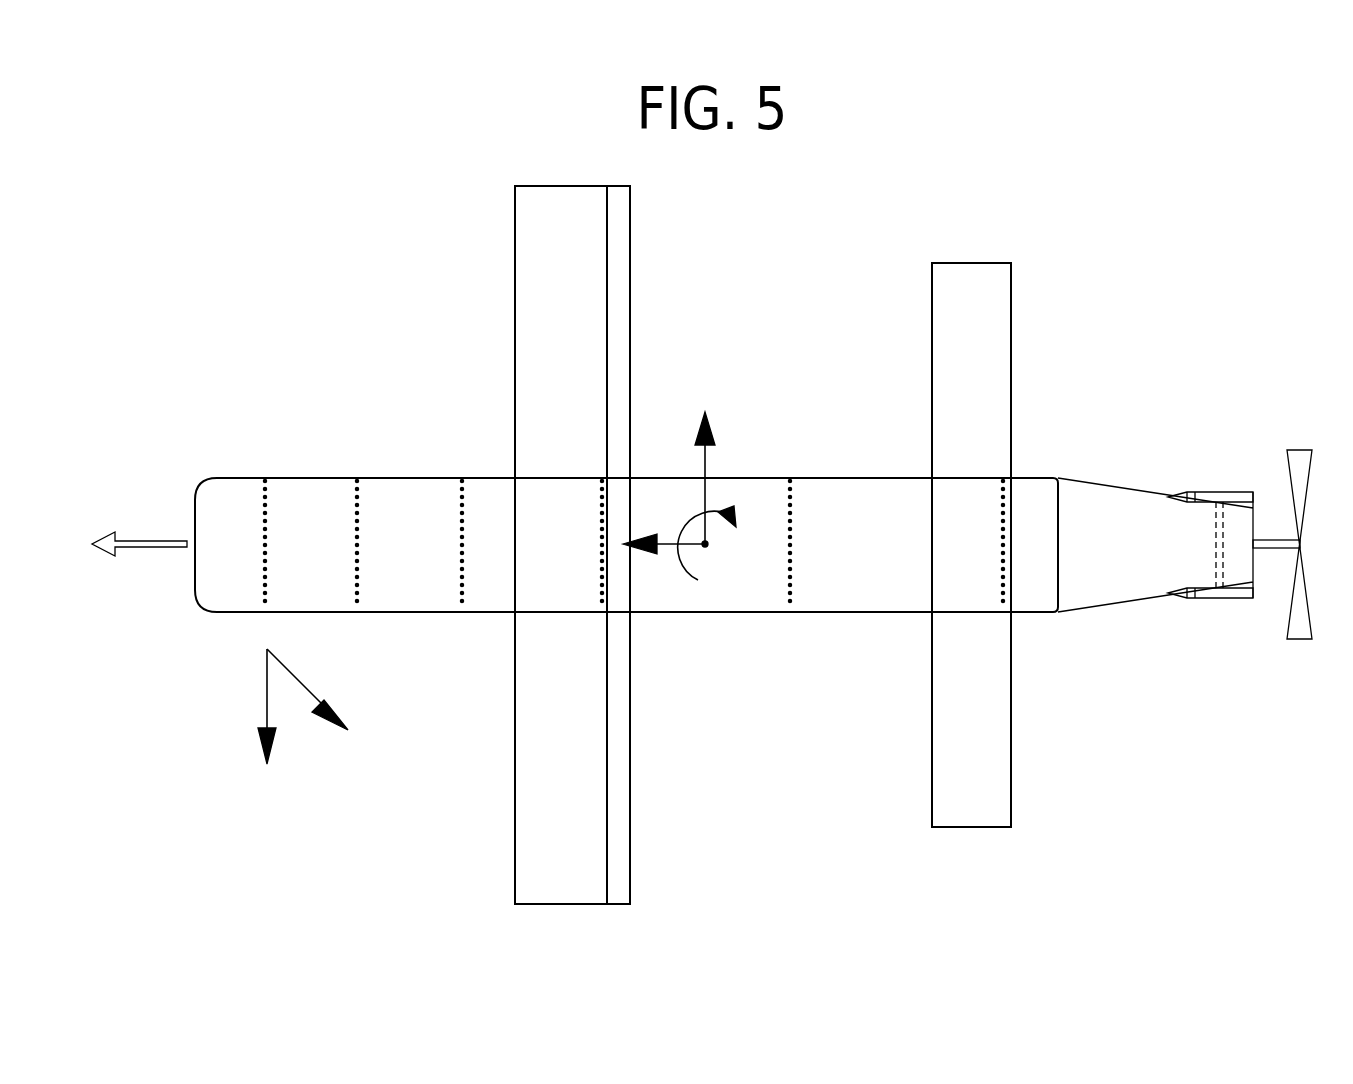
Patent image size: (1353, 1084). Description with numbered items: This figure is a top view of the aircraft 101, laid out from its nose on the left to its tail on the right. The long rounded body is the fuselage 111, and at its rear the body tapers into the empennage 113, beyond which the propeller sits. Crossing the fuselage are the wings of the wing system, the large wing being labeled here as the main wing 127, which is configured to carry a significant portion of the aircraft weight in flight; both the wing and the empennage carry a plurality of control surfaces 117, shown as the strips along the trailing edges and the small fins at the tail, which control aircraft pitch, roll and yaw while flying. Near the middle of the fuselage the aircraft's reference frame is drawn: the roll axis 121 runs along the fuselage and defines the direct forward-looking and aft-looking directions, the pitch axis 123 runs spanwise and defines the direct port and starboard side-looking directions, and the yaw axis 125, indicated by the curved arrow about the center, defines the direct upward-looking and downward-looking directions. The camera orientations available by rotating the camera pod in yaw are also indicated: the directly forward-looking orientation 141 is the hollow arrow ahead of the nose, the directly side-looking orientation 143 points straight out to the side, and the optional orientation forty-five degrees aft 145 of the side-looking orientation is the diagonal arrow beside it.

The aircraft 101 is at (300, 284).
The fuselage 111 is at (421, 614).
The empennage 113 is at (1200, 568).
The control surfaces 117 is at (620, 294).
The roll axis 121 is at (636, 553).
The pitch axis 123 is at (712, 432).
The yaw axis 125 is at (733, 515).
The main wing 127 is at (515, 822).
The directly forward-looking orientation 141 is at (154, 540).
The directly side-looking orientation 143 is at (267, 697).
The forty-five degree aft orientation 145 is at (305, 683).